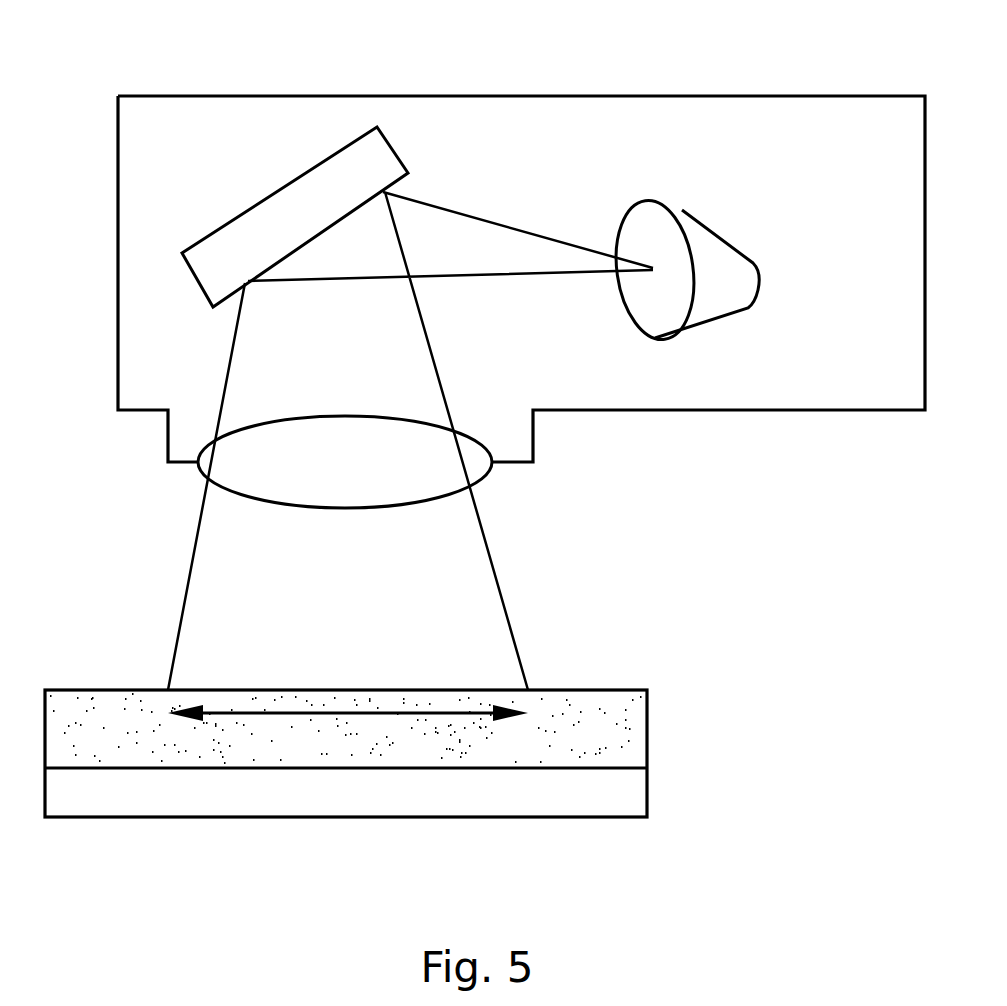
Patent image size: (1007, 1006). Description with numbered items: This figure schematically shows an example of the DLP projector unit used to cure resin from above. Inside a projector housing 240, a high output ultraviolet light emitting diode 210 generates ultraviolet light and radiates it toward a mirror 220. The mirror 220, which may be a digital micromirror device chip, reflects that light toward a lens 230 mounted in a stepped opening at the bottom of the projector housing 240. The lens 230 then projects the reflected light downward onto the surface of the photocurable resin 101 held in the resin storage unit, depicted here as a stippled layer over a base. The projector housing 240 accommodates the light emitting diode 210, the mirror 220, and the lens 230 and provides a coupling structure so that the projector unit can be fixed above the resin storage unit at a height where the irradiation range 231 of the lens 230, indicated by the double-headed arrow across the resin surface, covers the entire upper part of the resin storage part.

The photocurable resin 101 is at (595, 688).
The high output ultraviolet light emitting diode 210 is at (728, 257).
The mirror 220 is at (372, 147).
The lens 230 is at (420, 437).
The irradiation range 231 is at (330, 713).
The projector housing 240 is at (757, 97).